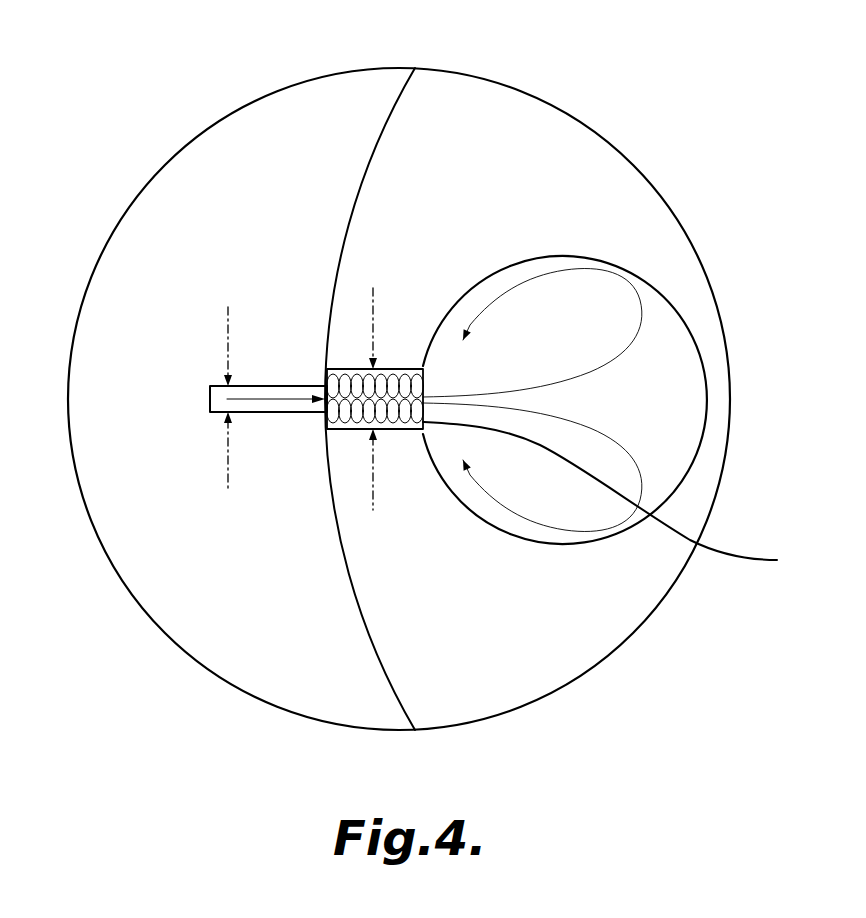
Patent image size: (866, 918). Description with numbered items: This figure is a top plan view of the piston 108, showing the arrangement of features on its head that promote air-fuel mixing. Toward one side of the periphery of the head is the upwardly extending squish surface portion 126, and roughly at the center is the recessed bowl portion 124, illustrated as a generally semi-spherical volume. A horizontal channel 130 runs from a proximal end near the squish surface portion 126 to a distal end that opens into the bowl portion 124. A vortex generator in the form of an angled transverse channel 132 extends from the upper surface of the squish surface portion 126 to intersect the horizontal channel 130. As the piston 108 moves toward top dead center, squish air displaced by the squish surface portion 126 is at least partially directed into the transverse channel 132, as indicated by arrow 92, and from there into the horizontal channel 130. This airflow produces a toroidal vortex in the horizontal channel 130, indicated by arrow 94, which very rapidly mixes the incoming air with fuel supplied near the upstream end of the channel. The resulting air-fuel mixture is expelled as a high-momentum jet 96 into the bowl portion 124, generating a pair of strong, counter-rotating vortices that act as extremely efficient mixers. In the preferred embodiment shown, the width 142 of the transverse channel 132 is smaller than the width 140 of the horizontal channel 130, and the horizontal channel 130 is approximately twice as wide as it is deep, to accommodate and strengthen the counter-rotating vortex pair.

The arrow 92 is at (230, 273).
The arrow 94 is at (390, 382).
The high-momentum jet 96 is at (640, 306).
The piston 108 is at (414, 399).
The bowl portion 124 is at (673, 360).
The squish surface portion 126 is at (138, 222).
The horizontal channel 130 is at (352, 368).
The transverse channel 132 is at (268, 386).
The width of the horizontal channel 140 is at (373, 492).
The width of the transverse channel 142 is at (227, 340).